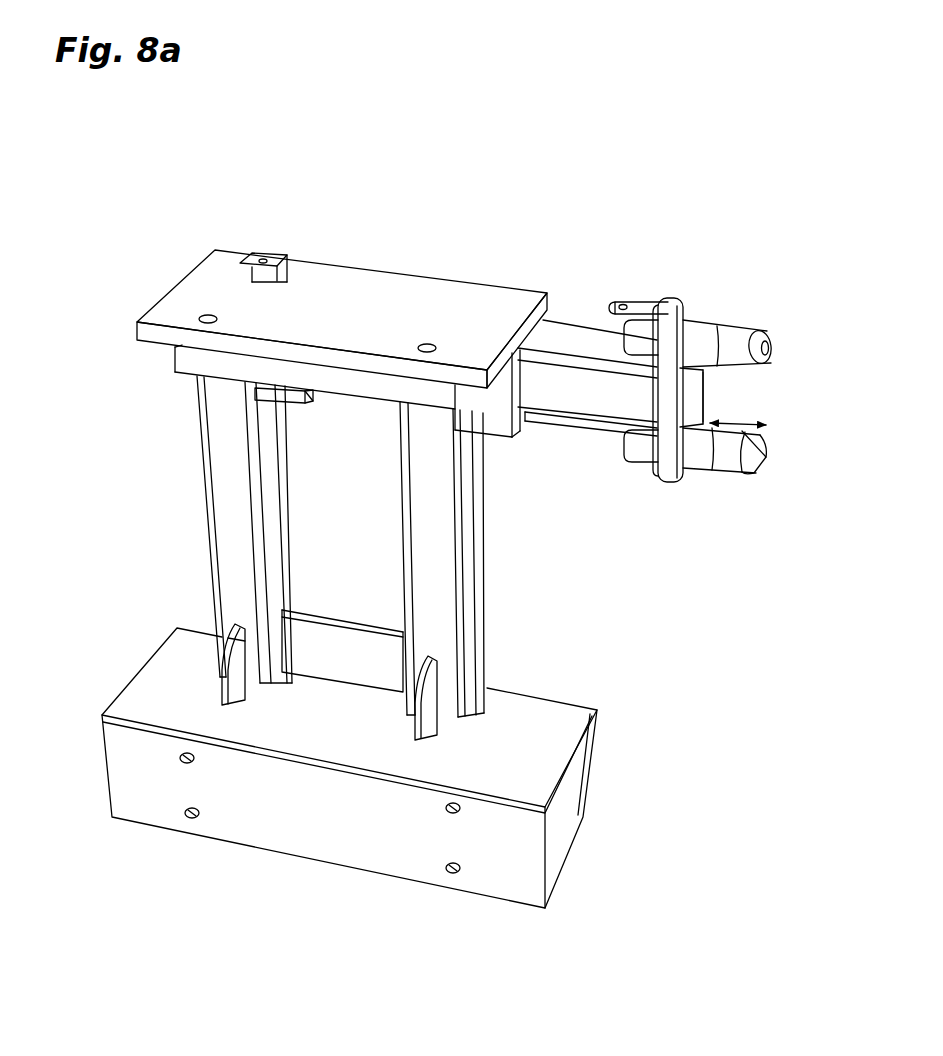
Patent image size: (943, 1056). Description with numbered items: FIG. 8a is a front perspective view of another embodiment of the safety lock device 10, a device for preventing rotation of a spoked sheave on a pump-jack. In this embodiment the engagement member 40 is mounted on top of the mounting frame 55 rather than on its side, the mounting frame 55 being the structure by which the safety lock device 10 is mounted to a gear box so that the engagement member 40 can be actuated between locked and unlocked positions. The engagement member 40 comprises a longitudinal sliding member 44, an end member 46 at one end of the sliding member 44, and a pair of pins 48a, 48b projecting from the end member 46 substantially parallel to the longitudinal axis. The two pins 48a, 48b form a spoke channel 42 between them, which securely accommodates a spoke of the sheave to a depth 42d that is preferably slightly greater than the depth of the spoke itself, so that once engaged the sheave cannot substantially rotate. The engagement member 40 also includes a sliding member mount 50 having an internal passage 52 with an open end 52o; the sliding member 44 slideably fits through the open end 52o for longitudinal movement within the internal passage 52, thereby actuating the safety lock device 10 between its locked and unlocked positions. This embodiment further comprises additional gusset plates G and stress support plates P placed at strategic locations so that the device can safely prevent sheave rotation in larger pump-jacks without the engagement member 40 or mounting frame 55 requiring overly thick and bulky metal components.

The safety lock device 10 is at (445, 488).
The engagement member 40 is at (533, 132).
The sliding member mount 50 is at (535, 263).
The internal passage 52 is at (587, 332).
The open end 52o is at (552, 318).
The longitudinal sliding member 44 is at (585, 438).
The end member 46 is at (690, 262).
The pin 48a is at (744, 306).
The pin 48b is at (776, 476).
The spoke channel 42 is at (747, 390).
The depth of spoke channel 42d is at (742, 423).
The gusset plates G is at (712, 380).
The stress support plates P is at (303, 412).
The mounting frame 55 is at (105, 440).